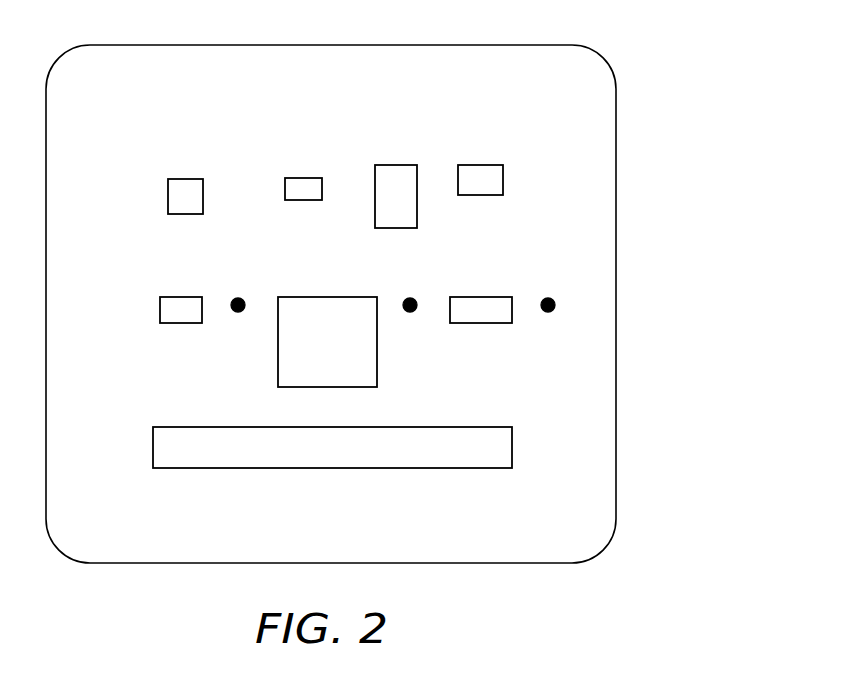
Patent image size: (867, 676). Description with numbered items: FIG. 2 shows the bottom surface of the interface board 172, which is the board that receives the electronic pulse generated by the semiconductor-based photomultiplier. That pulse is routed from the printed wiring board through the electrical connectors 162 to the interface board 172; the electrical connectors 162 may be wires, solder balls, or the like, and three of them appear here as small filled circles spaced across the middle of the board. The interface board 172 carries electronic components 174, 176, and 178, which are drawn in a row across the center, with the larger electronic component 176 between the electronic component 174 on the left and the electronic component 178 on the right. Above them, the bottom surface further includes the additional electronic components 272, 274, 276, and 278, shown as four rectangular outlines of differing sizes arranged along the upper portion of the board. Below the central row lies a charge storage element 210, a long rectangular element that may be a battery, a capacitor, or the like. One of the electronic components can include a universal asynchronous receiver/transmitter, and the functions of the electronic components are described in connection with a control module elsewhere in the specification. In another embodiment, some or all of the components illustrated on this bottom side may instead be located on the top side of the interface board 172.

The interface board 172 is at (660, 67).
The electronic component 272 is at (182, 188).
The electronic component 274 is at (305, 187).
The electronic component 276 is at (393, 175).
The electronic component 278 is at (475, 173).
The electrical connector 162 is at (245, 296).
The electronic component 174 is at (182, 314).
The electronic component 176 is at (307, 355).
The electronic component 178 is at (477, 313).
The charge storage element 210 is at (312, 461).